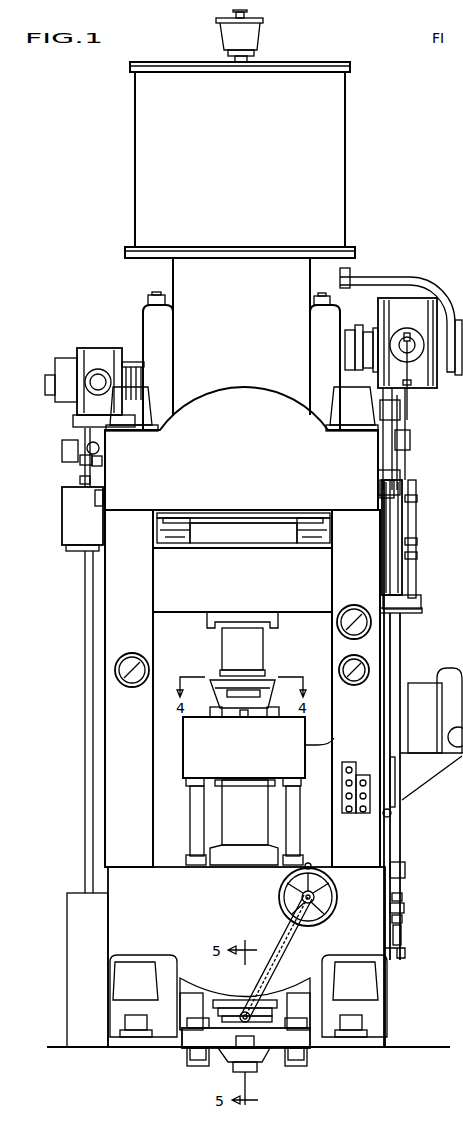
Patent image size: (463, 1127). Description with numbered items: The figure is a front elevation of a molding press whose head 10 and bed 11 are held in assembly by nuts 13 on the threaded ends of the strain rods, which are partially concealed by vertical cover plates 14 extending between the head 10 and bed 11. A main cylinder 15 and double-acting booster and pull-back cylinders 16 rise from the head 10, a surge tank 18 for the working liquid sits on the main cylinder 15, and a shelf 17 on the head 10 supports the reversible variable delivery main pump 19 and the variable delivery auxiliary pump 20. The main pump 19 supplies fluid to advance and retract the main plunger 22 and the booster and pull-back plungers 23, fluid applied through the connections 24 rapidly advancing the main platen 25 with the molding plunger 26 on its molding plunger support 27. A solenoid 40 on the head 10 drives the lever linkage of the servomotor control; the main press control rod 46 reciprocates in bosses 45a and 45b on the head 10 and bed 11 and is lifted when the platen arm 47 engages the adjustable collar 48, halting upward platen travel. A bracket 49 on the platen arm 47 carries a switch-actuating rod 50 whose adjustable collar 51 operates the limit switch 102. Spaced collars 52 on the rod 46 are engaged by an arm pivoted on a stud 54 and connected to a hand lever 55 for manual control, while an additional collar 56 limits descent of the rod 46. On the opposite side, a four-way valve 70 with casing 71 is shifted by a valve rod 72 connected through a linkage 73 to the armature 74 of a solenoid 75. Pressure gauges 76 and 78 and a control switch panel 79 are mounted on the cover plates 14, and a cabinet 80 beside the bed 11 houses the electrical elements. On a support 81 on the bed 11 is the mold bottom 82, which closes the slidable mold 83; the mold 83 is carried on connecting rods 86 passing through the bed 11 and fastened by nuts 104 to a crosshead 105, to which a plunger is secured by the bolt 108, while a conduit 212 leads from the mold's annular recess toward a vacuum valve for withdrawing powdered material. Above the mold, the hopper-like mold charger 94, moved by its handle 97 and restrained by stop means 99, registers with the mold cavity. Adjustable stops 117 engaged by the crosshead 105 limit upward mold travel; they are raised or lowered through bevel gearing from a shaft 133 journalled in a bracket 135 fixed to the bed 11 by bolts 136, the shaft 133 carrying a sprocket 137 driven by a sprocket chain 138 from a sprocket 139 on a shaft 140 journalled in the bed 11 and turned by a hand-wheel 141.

The head 10 is at (241, 471).
The bed 11 is at (205, 885).
The nuts 13 is at (131, 413).
The vertical cover plates 14 is at (105, 718).
The main cylinder 15 is at (248, 296).
The booster and pull-back cylinders 16 is at (163, 340).
The shelf 17 is at (362, 612).
The surge tank 18 is at (332, 156).
The main pump 19 is at (413, 320).
The auxiliary pump 20 is at (92, 350).
The main plunger 22 is at (254, 543).
The booster and pull-back plungers 23 is at (180, 535).
The connections 24 is at (156, 296).
The main platen 25 is at (252, 592).
The molding plunger 26 is at (260, 648).
The molding plunger support 27 is at (278, 617).
The solenoid 40 is at (418, 520).
The boss 45a is at (400, 490).
The boss 45b is at (405, 866).
The main press control rod 46 is at (400, 665).
The platen arm 47 is at (398, 613).
The adjustable collar 48 is at (393, 598).
The bracket 49 is at (421, 606).
The switch-actuating rod 50 is at (418, 578).
The switch-actuating collar 51 is at (418, 498).
The spaced collars 52 is at (402, 897).
The stud 54 is at (404, 908).
The hand lever 55 is at (386, 857).
The additional collar 56 is at (401, 937).
The four-way valve 70 is at (62, 451).
The casing 71 is at (102, 461).
The valve rod 72 is at (100, 448).
The linkage 73 is at (80, 460).
The armature 74 is at (80, 480).
The solenoid 75 is at (72, 510).
The pressure gauge 76 is at (122, 655).
The pressure gauge 78 is at (352, 684).
The control switch panel 79 is at (358, 767).
The cabinet 80 is at (68, 905).
The support 81 is at (225, 855).
The anvil or mold bottom 82 is at (250, 822).
The slidable mold 83 is at (249, 757).
The connecting rods 86 is at (192, 1007).
The mold charger 94 is at (214, 697).
The handle 97 is at (258, 690).
The stop means 99 is at (247, 717).
The limit switch 102 is at (418, 541).
The nuts 104 is at (186, 1064).
The crosshead 105 is at (186, 1042).
The bolt 108 is at (258, 1068).
The adjustable stops 117 is at (242, 1026).
The shaft 133 is at (222, 1050).
The bracket 135 is at (237, 1000).
The bolts 136 is at (240, 985).
The sprocket 137 is at (250, 1022).
The sprocket chain 138 is at (274, 950).
The sprocket 139 is at (290, 888).
The shaft 140 is at (325, 893).
The hand-wheel 141 is at (335, 908).
The conduit 212 is at (318, 748).